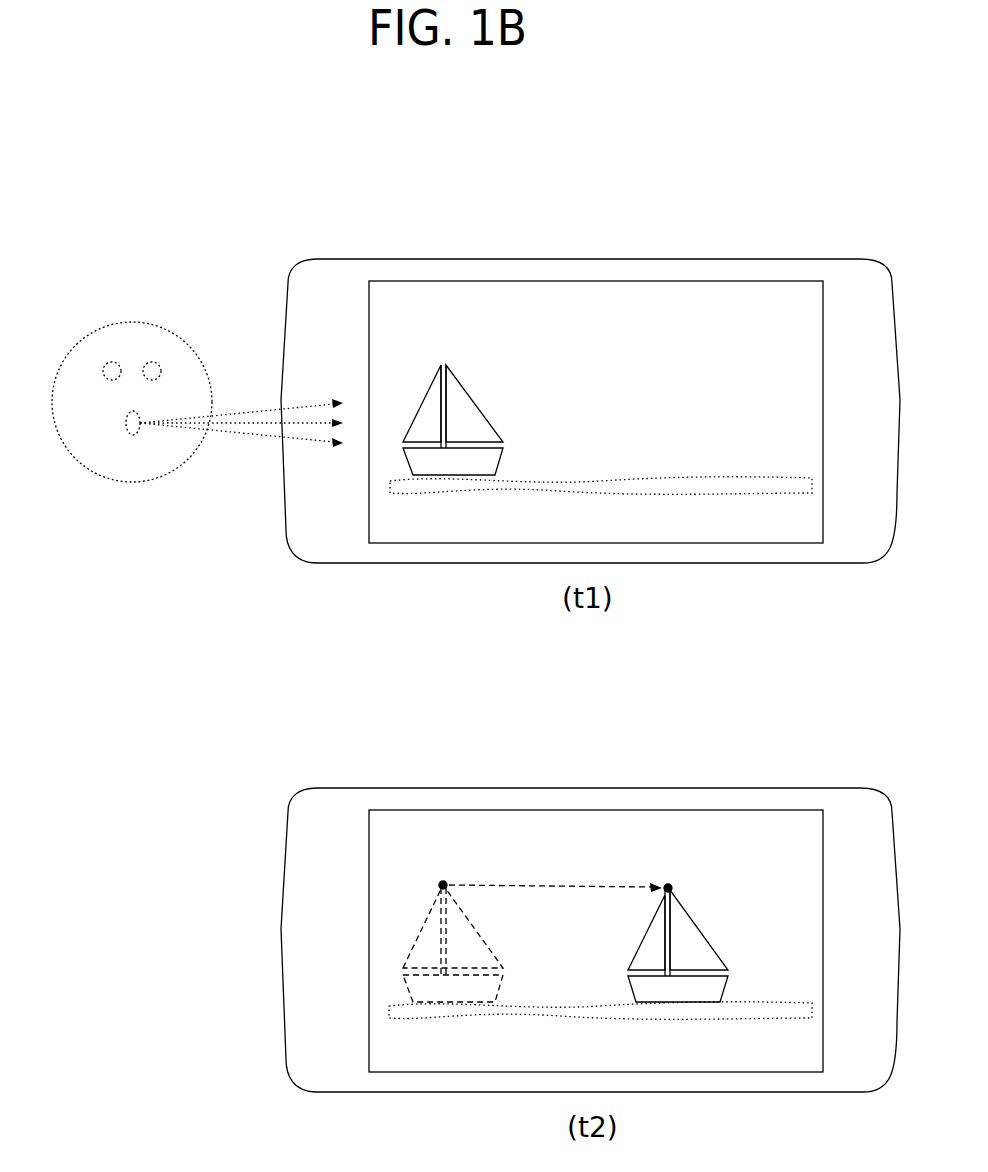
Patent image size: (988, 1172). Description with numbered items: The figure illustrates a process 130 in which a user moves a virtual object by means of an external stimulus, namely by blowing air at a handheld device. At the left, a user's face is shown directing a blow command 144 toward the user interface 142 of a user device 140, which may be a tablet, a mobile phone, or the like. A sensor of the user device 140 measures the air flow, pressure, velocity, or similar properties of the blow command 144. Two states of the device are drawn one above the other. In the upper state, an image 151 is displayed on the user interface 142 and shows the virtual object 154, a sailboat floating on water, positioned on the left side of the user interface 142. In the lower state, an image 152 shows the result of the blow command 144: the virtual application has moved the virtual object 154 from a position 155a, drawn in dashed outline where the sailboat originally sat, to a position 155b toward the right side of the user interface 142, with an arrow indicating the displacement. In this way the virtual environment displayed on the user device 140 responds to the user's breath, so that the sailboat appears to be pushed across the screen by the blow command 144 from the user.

The process 130 is at (73, 58).
The user device 140 is at (783, 257).
The user interface 142 is at (821, 363).
The blow command 144 is at (272, 423).
The image 151 is at (417, 315).
The image 152 is at (415, 844).
The virtual object 154 is at (476, 405).
The position 155a is at (444, 883).
The position 155b is at (669, 886).